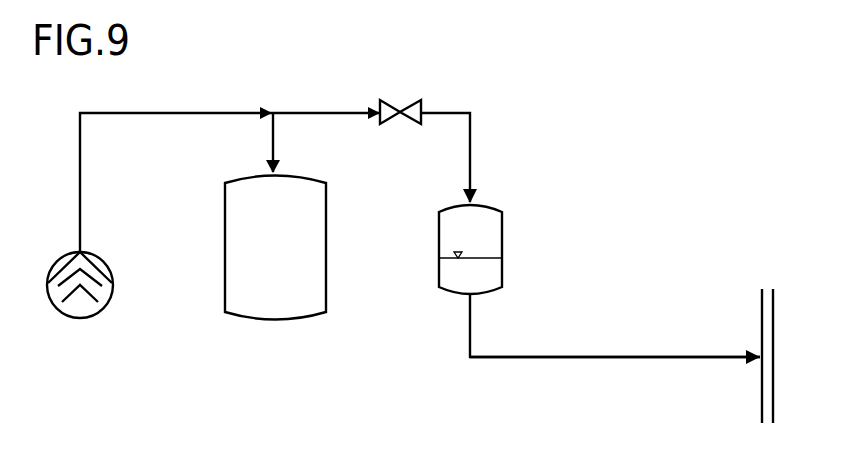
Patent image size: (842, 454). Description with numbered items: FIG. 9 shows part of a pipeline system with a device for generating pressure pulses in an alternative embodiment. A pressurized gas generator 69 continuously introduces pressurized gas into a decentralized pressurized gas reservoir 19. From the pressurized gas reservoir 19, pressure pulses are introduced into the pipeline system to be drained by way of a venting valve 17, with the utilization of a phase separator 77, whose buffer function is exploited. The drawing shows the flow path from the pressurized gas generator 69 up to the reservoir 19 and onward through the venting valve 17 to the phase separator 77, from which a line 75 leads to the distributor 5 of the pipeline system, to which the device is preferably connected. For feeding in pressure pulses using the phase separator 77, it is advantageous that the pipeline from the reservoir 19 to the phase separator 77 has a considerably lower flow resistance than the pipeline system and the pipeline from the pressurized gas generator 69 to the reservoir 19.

The pressurized gas generator 69 is at (97, 318).
The pressurized gas reservoir 19 is at (270, 323).
The venting valve 17 is at (415, 100).
The phase separator 77 is at (502, 223).
The line 75 is at (618, 356).
The distributor 5 is at (760, 312).